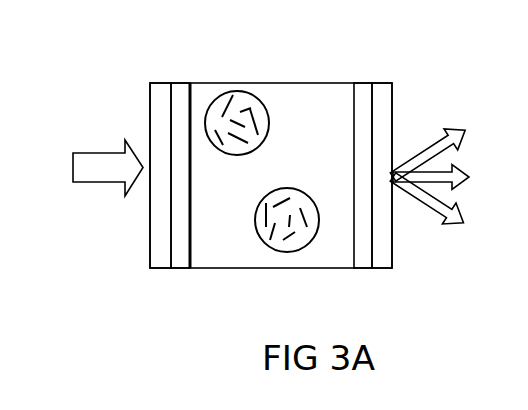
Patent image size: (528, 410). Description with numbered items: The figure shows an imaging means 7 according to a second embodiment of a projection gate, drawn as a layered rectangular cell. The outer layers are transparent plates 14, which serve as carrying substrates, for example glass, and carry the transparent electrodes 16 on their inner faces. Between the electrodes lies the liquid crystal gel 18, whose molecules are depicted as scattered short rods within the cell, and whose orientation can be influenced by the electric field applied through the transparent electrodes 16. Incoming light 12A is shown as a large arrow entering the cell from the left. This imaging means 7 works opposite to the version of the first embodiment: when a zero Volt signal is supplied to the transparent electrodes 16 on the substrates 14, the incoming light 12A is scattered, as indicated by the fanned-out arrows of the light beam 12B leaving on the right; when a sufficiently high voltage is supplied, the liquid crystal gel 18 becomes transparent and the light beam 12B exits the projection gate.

The imaging means 7 is at (199, 293).
The incoming light 12A is at (78, 153).
The light beam 12B is at (463, 133).
The transparent plates 14 is at (170, 83).
The transparent electrodes 16 is at (188, 83).
The liquid crystal gel 18 is at (247, 88).